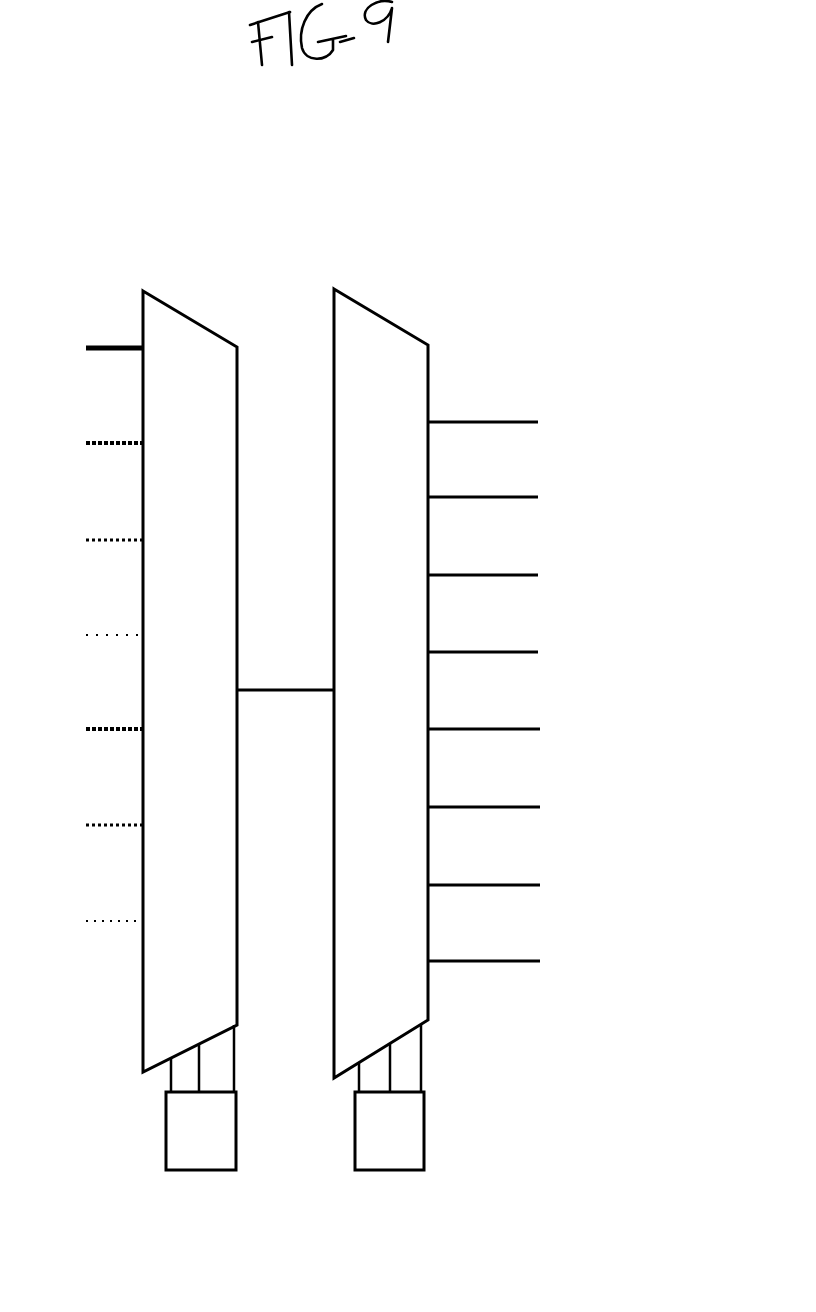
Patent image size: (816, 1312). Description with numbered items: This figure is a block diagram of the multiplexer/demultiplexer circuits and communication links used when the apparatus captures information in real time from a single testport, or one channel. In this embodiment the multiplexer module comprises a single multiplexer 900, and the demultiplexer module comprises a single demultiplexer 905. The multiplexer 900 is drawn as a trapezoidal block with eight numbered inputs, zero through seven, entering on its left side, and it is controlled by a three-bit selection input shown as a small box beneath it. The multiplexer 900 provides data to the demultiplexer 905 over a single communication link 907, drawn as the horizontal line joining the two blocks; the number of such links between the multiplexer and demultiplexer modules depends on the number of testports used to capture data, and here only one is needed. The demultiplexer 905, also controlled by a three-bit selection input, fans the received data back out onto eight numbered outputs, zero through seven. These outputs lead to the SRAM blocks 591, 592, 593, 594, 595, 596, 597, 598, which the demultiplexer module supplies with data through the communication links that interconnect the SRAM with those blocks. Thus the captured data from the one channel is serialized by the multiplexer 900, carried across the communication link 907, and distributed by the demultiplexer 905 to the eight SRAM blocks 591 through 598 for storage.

The multiplexer 900 is at (212, 365).
The demultiplexer 905 is at (392, 357).
The communication link 907 is at (273, 692).
The SRAM block 591 is at (582, 370).
The SRAM block 592 is at (555, 458).
The SRAM block 593 is at (547, 547).
The SRAM block 594 is at (547, 615).
The SRAM block 595 is at (539, 694).
The SRAM block 596 is at (539, 775).
The SRAM block 597 is at (537, 853).
The SRAM block 598 is at (558, 921).